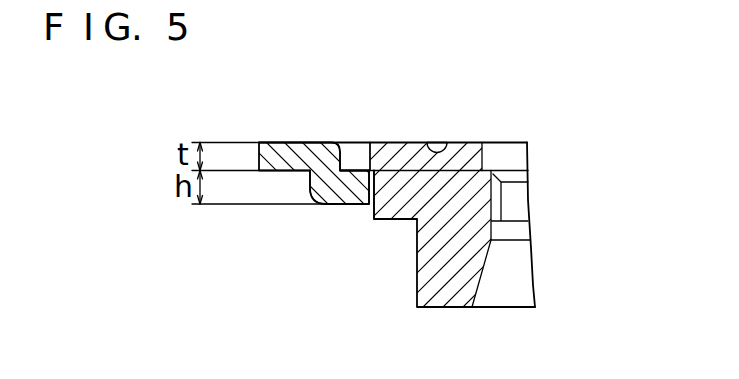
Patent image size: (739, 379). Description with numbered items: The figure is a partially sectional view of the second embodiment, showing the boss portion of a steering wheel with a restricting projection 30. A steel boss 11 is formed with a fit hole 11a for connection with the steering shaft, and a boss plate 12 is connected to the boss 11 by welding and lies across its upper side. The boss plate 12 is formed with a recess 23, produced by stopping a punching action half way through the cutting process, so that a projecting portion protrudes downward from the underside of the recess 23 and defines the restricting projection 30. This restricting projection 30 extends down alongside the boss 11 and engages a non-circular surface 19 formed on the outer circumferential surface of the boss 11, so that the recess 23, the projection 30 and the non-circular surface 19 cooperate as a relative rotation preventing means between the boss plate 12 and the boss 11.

The boss 11 is at (443, 300).
The fit hole 11a is at (516, 203).
The boss plate 12 is at (294, 146).
The non-circular surface 19 is at (379, 209).
The recess 23 is at (356, 150).
The restricting projection 30 is at (350, 205).